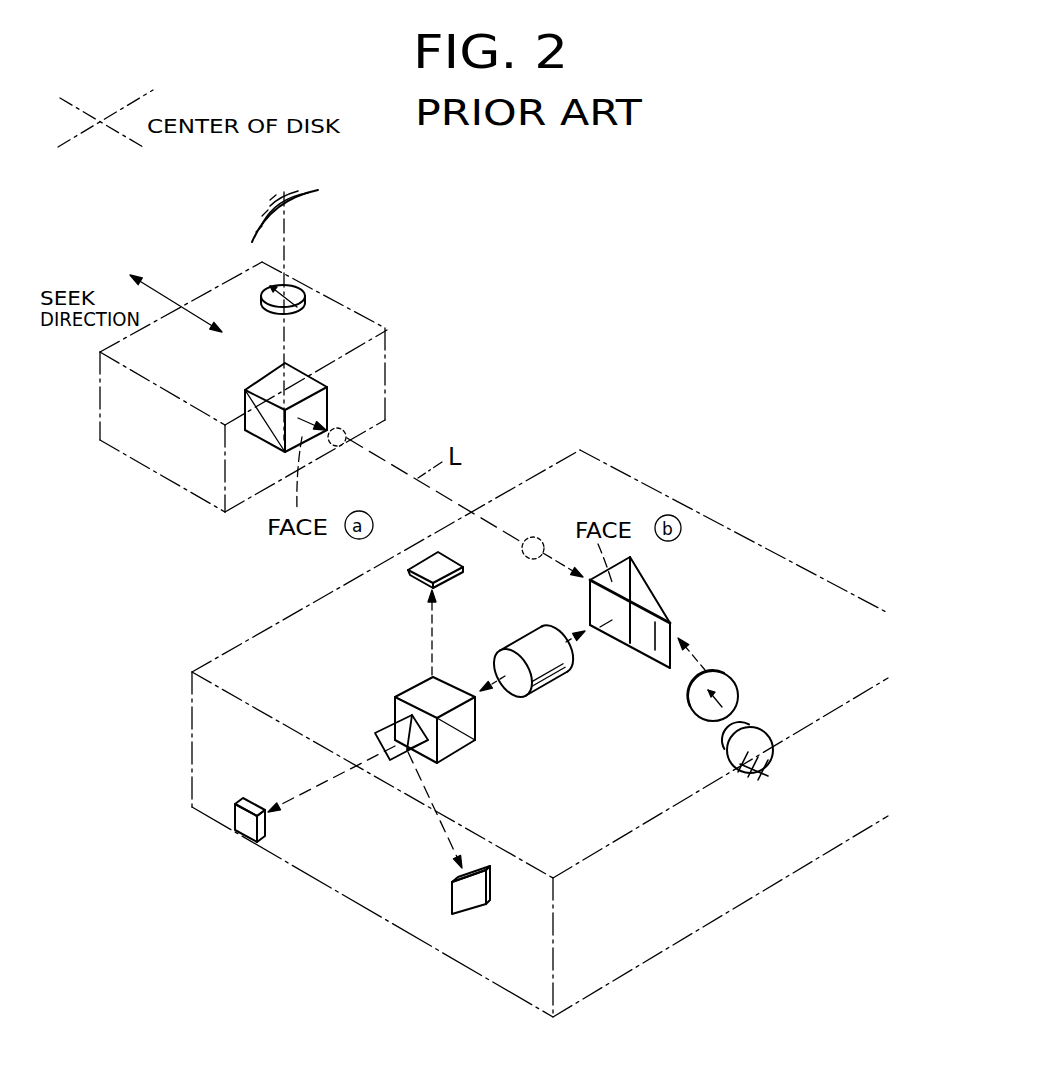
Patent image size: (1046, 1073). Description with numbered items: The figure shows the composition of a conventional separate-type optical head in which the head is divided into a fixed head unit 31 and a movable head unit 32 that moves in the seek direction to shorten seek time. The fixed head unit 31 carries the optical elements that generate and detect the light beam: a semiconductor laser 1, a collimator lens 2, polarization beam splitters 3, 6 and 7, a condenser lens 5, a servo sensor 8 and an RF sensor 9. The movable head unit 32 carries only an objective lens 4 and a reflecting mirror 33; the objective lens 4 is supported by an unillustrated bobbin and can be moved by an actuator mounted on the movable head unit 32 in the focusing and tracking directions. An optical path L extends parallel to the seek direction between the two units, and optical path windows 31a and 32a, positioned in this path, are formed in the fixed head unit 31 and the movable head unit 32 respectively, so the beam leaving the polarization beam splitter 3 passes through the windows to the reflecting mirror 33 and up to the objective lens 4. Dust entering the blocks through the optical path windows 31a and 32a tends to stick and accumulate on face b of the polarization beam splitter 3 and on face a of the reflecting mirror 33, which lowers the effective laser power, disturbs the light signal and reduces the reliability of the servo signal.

The semiconductor laser 1 is at (764, 728).
The collimator lens 2 is at (730, 676).
The polarization beam splitter 3 is at (655, 600).
The objective lens 4 is at (300, 290).
The condenser lens 5 is at (552, 683).
The polarization beam splitter 6 is at (455, 745).
The polarization beam splitter 7 is at (384, 733).
The servo sensor 8 is at (418, 580).
The RF sensor 9 is at (250, 803).
The fixed head unit 31 is at (668, 934).
The optical path window 31a is at (530, 536).
The movable head unit 32 is at (400, 342).
The optical path window 32a is at (352, 428).
The reflecting mirror 33 is at (252, 385).